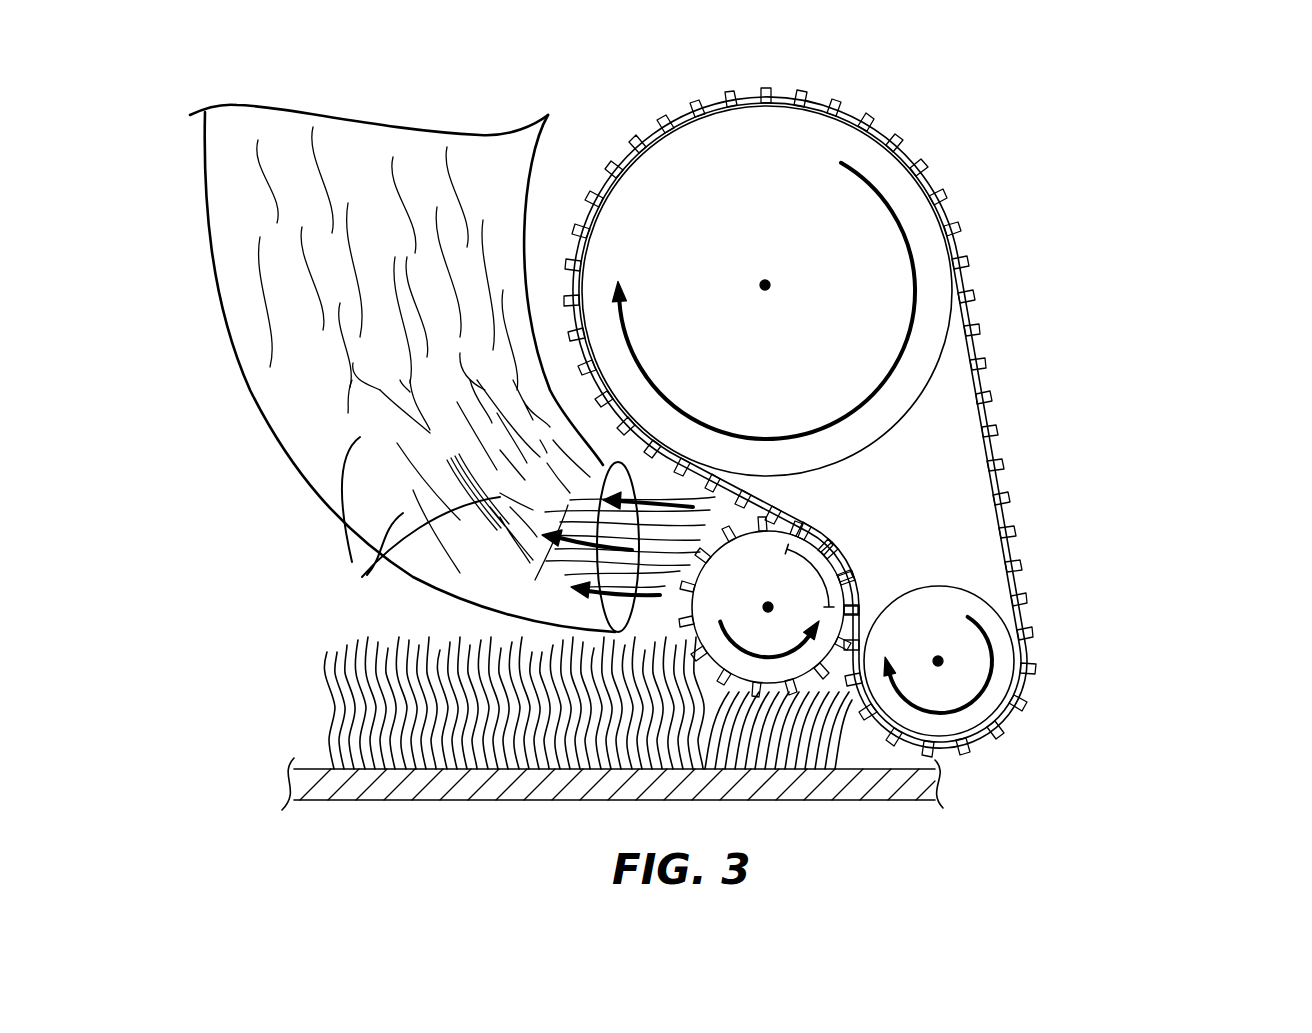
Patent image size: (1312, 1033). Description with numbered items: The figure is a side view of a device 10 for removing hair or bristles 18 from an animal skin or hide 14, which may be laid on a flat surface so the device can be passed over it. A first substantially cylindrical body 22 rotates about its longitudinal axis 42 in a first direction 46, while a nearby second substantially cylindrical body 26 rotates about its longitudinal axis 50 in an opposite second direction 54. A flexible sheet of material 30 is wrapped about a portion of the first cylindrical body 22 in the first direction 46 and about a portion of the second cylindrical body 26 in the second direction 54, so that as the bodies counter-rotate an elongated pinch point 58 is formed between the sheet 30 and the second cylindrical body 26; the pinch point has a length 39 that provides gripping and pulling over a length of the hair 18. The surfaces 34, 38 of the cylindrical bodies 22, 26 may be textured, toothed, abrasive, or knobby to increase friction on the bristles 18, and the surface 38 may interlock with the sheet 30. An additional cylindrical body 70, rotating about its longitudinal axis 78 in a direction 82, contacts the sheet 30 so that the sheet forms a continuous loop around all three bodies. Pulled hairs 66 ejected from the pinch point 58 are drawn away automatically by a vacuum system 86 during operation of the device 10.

The device 10 is at (1163, 360).
The skin or hide 14 is at (532, 782).
The hair or bristles 18 is at (330, 705).
The first substantially cylindrical body 22 is at (1003, 678).
The second substantially cylindrical body 26 is at (775, 670).
The flexible sheet of material 30 is at (839, 428).
The textured surface of first cylindrical body 34 is at (968, 585).
The textured surface of second cylindrical body 38 is at (775, 517).
The length of elongated pinch point 39 is at (823, 570).
The longitudinal axis of first cylindrical body 42 is at (943, 662).
The first direction 46 is at (975, 705).
The longitudinal axis of second cylindrical body 50 is at (768, 683).
The second direction 54 is at (736, 649).
The elongated pinch point 58 is at (837, 694).
The pulled hairs 66 is at (365, 572).
The additional cylindrical body 70 is at (938, 287).
The longitudinal axis of additional cylindrical body 78 is at (768, 282).
The direction of rotation of additional cylindrical body 82 is at (887, 200).
The vacuum system 86 is at (260, 417).